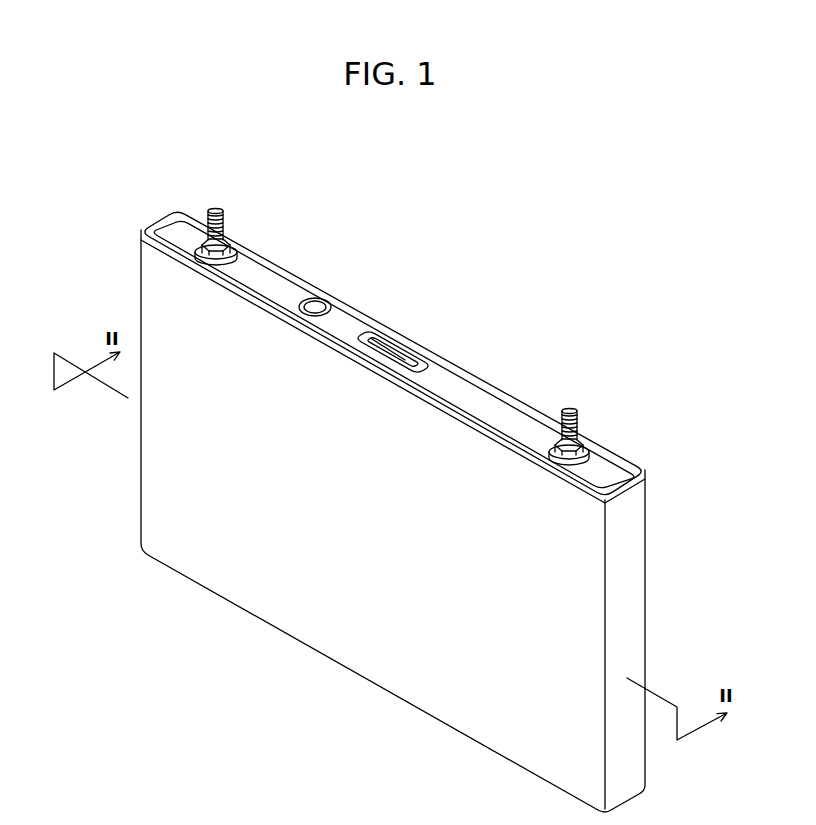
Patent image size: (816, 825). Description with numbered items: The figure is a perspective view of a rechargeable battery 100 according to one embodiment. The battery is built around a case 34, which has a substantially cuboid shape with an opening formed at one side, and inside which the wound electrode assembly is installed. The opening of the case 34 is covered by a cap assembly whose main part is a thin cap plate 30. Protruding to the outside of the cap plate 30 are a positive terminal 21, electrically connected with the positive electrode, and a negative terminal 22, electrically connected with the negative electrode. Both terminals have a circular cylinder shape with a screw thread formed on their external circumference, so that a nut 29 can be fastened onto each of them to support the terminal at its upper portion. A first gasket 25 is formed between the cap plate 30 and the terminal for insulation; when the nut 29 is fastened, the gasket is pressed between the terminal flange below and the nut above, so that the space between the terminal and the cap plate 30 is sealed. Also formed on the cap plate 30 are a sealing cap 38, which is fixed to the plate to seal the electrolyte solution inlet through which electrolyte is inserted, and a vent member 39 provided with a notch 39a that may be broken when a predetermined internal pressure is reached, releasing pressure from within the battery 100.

The rechargeable battery 100 is at (482, 345).
The positive terminal 21 is at (218, 211).
The negative terminal 22 is at (568, 410).
The first gasket 25 is at (598, 458).
The nut 29 is at (584, 434).
The cap plate 30 is at (357, 303).
The case 34 is at (351, 644).
The sealing cap 38 is at (315, 299).
The vent member 39 is at (389, 338).
The notch 39a is at (400, 341).